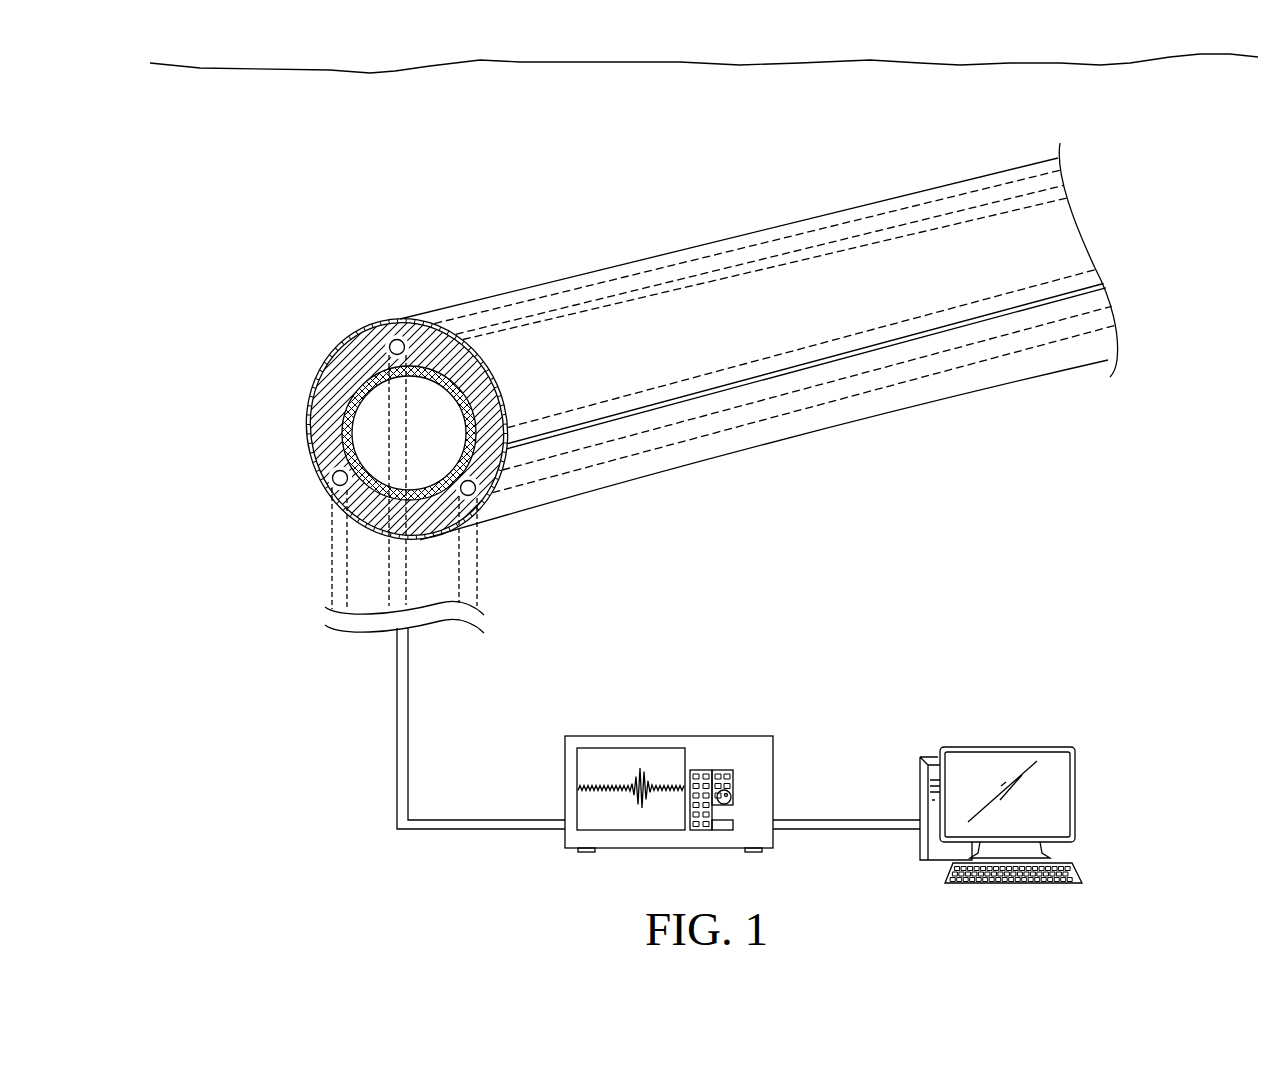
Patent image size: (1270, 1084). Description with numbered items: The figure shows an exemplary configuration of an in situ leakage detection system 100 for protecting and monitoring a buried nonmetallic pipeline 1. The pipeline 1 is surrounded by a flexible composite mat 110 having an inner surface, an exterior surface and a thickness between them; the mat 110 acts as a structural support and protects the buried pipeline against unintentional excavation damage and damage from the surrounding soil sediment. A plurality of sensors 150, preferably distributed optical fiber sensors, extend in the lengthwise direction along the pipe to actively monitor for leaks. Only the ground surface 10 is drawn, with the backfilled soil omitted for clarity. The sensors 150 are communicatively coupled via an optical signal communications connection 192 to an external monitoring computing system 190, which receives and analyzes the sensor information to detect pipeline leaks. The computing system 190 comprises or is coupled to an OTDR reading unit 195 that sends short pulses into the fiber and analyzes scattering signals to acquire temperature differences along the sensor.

The buried nonmetallic pipeline 1 is at (699, 507).
The ground surface 10 is at (560, 63).
The in situ leakage detection system 100 is at (218, 279).
The flexible composite mat 110 is at (810, 440).
The sensors 150 is at (396, 338).
The external monitoring computing system 190 is at (934, 752).
The optical signal communications connection 192 is at (395, 712).
The OTDR reading unit 195 is at (703, 736).